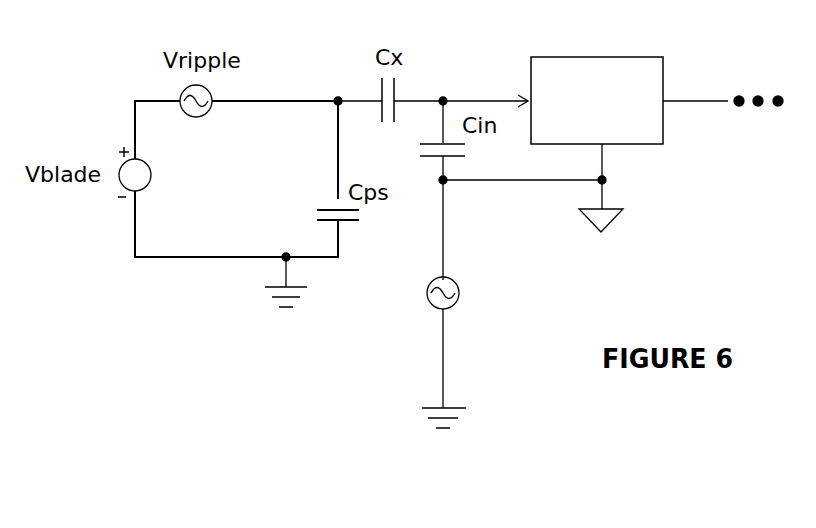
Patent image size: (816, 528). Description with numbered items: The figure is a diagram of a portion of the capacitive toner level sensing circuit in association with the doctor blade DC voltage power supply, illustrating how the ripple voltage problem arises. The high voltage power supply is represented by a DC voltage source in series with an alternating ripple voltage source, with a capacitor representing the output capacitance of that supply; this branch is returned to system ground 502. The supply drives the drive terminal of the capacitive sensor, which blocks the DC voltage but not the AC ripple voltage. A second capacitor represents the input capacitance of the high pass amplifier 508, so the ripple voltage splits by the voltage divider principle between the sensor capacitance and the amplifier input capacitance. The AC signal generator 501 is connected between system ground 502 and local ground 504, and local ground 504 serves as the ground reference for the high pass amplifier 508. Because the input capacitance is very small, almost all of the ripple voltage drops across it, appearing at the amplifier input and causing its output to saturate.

The high pass amplifier 508 is at (652, 68).
The local ground 504 is at (631, 186).
The AC signal generator 501 is at (411, 299).
The system ground 502 is at (253, 303).